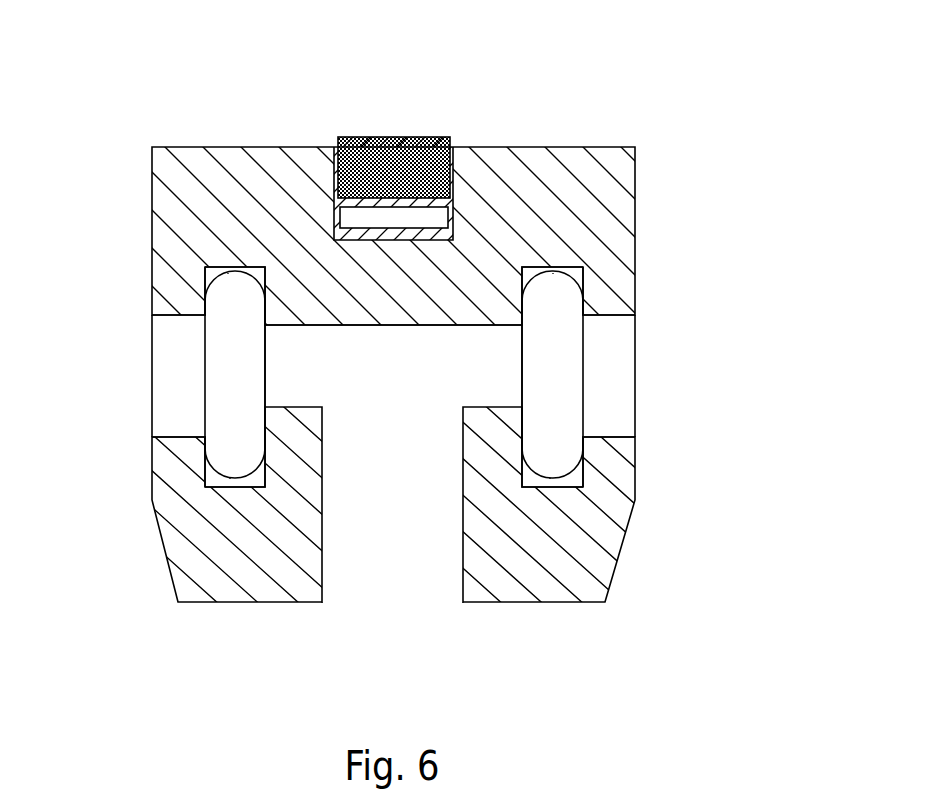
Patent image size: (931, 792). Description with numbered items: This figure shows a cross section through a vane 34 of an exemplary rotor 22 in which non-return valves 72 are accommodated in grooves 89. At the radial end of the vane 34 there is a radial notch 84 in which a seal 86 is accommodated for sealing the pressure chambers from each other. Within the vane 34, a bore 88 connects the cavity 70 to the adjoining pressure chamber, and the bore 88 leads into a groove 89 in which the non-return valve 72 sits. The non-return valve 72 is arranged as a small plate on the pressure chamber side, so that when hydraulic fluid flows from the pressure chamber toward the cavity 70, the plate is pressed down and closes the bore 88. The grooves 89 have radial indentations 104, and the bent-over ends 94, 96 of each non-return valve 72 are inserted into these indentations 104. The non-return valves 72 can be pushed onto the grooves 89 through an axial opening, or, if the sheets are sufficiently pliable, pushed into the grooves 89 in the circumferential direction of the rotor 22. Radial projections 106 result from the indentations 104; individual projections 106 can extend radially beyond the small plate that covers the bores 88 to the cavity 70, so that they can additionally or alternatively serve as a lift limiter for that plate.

The rotor 22 is at (683, 82).
The vane 34 is at (578, 188).
The cavity 70 is at (395, 517).
The non-return valve 72 is at (265, 330).
The radial notch 84 is at (408, 220).
The seal 86 is at (397, 147).
The bore 88 is at (492, 363).
The groove 89 is at (163, 382).
The bent-over end 94 is at (228, 273).
The bent-over end 96 is at (230, 480).
The radial indentation 104 is at (205, 267).
The radial projection 106 is at (152, 297).